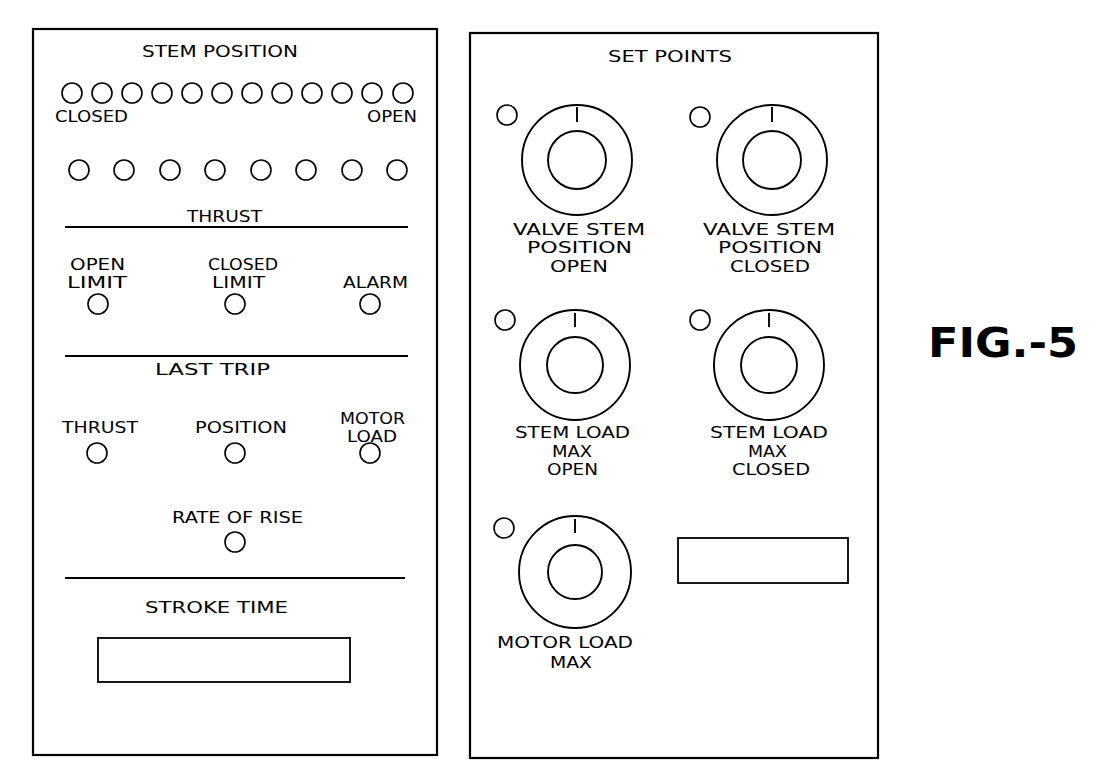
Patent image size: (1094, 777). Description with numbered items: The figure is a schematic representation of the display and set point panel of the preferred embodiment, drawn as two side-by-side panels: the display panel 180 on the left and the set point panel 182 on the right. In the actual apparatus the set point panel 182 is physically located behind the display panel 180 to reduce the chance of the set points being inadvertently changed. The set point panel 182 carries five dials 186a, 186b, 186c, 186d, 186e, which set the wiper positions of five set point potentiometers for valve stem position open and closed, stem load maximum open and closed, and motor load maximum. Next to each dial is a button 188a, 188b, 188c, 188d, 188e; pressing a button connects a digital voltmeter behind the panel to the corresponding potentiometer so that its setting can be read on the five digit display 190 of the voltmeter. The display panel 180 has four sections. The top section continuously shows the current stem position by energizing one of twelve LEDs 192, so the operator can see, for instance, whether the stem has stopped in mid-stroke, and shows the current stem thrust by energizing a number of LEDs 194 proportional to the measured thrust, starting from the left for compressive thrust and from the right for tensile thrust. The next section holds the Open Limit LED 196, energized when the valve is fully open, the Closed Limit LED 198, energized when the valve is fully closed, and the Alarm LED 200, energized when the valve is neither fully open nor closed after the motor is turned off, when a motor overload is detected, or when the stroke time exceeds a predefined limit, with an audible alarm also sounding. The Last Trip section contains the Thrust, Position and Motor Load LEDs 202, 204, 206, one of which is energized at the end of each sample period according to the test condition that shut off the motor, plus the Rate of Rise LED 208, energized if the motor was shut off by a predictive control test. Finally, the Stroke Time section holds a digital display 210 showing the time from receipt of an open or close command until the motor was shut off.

The display panel 180 is at (383, 733).
The set point panel 182 is at (804, 728).
The dial 186a is at (606, 321).
The dial 186b is at (609, 115).
The dial 186c is at (804, 116).
The dial 186d is at (801, 321).
The dial 186e is at (606, 528).
The button 188a is at (510, 311).
The button 188b is at (512, 106).
The button 188c is at (707, 108).
The button 188d is at (706, 311).
The button 188e is at (508, 519).
The five digit display 190 is at (768, 583).
The LEDs 192 is at (366, 68).
The LEDs 194 is at (335, 189).
The Open Limit LED 196 is at (100, 314).
The Closed Limit LED 198 is at (242, 312).
The Alarm LED 200 is at (372, 314).
The Thrust LED 202 is at (103, 462).
The Position LED 204 is at (245, 452).
The Motor Load LED 206 is at (380, 453).
The Rate of Rise LED 208 is at (245, 540).
The digital display 210 is at (350, 650).